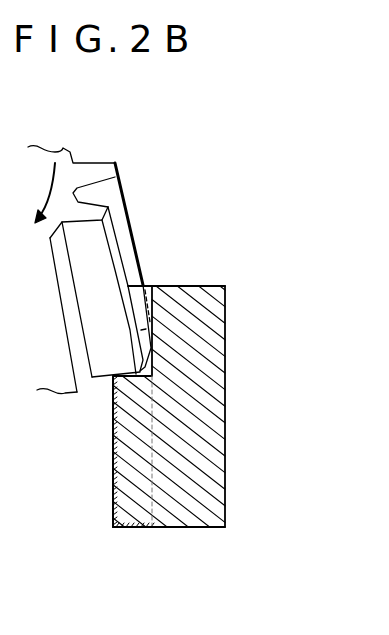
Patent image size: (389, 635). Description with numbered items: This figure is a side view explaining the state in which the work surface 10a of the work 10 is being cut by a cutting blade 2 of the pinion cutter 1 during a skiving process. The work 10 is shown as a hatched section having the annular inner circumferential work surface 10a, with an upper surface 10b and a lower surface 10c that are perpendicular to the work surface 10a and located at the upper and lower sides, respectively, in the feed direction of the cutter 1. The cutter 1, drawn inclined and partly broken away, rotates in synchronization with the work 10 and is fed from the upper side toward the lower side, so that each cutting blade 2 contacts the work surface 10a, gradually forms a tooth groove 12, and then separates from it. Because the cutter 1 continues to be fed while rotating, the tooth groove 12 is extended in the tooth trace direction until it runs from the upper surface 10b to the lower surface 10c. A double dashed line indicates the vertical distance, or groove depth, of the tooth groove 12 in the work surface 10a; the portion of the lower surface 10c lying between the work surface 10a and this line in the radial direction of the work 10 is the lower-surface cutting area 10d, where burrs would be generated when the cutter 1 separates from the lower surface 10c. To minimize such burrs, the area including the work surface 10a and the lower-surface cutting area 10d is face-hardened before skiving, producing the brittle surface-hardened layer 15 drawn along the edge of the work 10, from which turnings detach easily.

The pinion cutter 1 is at (109, 150).
The cutting blade 2 is at (115, 232).
The work 10 is at (207, 285).
The work surface 10a is at (113, 407).
The upper surface 10b is at (173, 285).
The lower surface 10c is at (187, 528).
The lower-surface cutting area 10d is at (152, 532).
The tooth groove 12 is at (140, 337).
The surface-hardened layer 15 is at (113, 488).